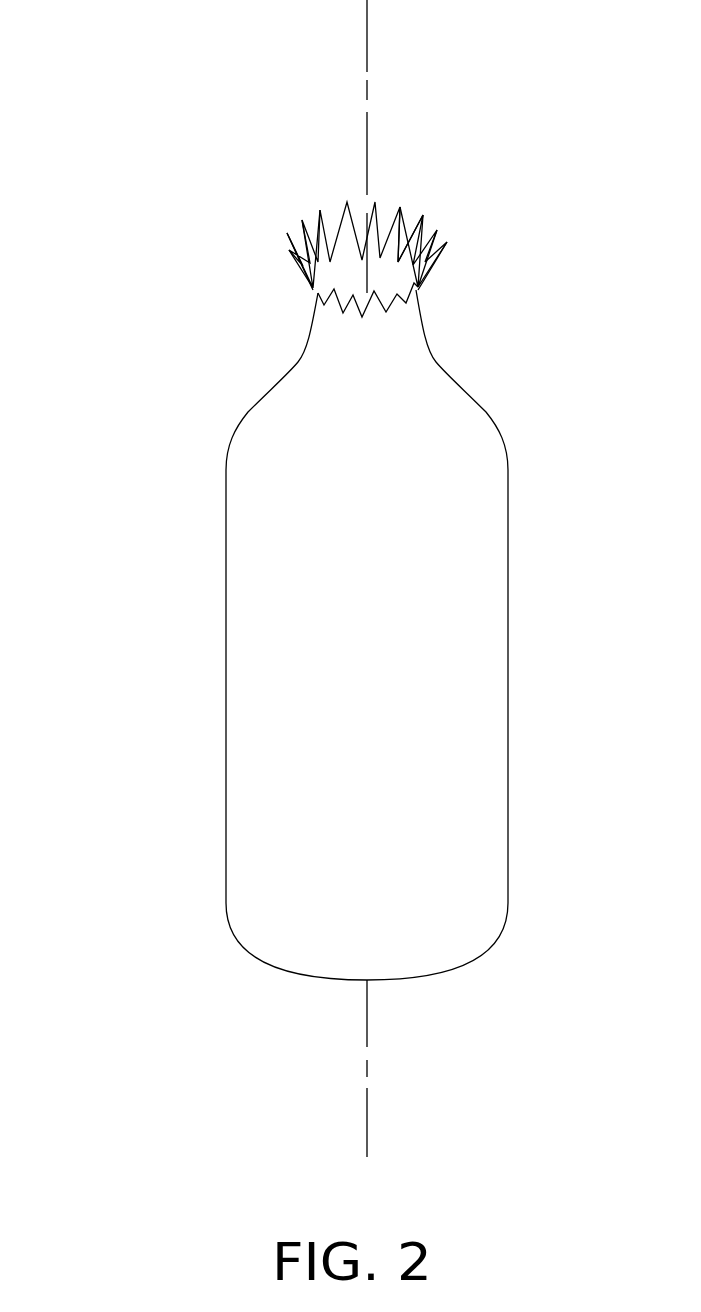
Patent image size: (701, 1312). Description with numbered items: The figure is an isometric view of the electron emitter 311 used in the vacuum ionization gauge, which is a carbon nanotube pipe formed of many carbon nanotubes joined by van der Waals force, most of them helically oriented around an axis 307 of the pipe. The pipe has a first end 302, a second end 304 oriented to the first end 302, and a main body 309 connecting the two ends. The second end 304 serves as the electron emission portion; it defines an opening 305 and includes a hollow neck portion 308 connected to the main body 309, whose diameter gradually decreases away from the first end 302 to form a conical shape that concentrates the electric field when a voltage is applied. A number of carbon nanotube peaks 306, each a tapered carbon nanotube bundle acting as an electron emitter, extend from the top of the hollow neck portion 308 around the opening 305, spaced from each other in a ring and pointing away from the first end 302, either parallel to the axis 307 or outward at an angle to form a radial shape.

The first end 302 is at (267, 958).
The second end 304 is at (332, 210).
The opening 305 is at (380, 278).
The carbon nanotube peaks 306 is at (373, 212).
The axis 307 is at (367, 45).
The hollow neck portion 308 is at (330, 352).
The main body 309 is at (287, 660).
The electron emitter 311 is at (432, 93).